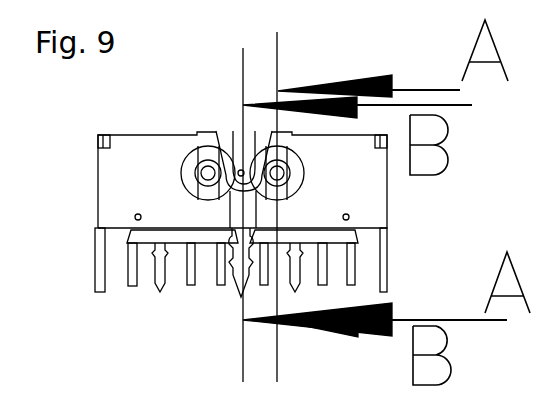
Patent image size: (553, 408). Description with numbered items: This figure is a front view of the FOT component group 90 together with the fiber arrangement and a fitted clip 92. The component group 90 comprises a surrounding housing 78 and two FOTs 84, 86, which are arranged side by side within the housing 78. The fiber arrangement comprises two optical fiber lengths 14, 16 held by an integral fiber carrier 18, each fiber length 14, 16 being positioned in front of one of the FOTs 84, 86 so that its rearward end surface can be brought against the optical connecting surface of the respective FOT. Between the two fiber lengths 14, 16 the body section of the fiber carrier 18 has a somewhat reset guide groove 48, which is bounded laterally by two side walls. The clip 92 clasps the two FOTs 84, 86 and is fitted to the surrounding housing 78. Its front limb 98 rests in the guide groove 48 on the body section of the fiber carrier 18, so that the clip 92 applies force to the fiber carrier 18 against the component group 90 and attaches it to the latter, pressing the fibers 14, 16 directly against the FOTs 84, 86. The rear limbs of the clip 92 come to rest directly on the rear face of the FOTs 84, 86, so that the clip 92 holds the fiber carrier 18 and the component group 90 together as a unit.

The optical fiber length 14 is at (283, 178).
The optical fiber length 16 is at (202, 172).
The fiber carrier 18 is at (305, 171).
The guide groove 48 is at (230, 196).
The surrounding housing 78 is at (375, 221).
The FOT 84 is at (345, 237).
The FOT 86 is at (127, 235).
The FOT component group 90 is at (387, 205).
The clip 92 is at (228, 143).
The front limb 98 is at (263, 160).